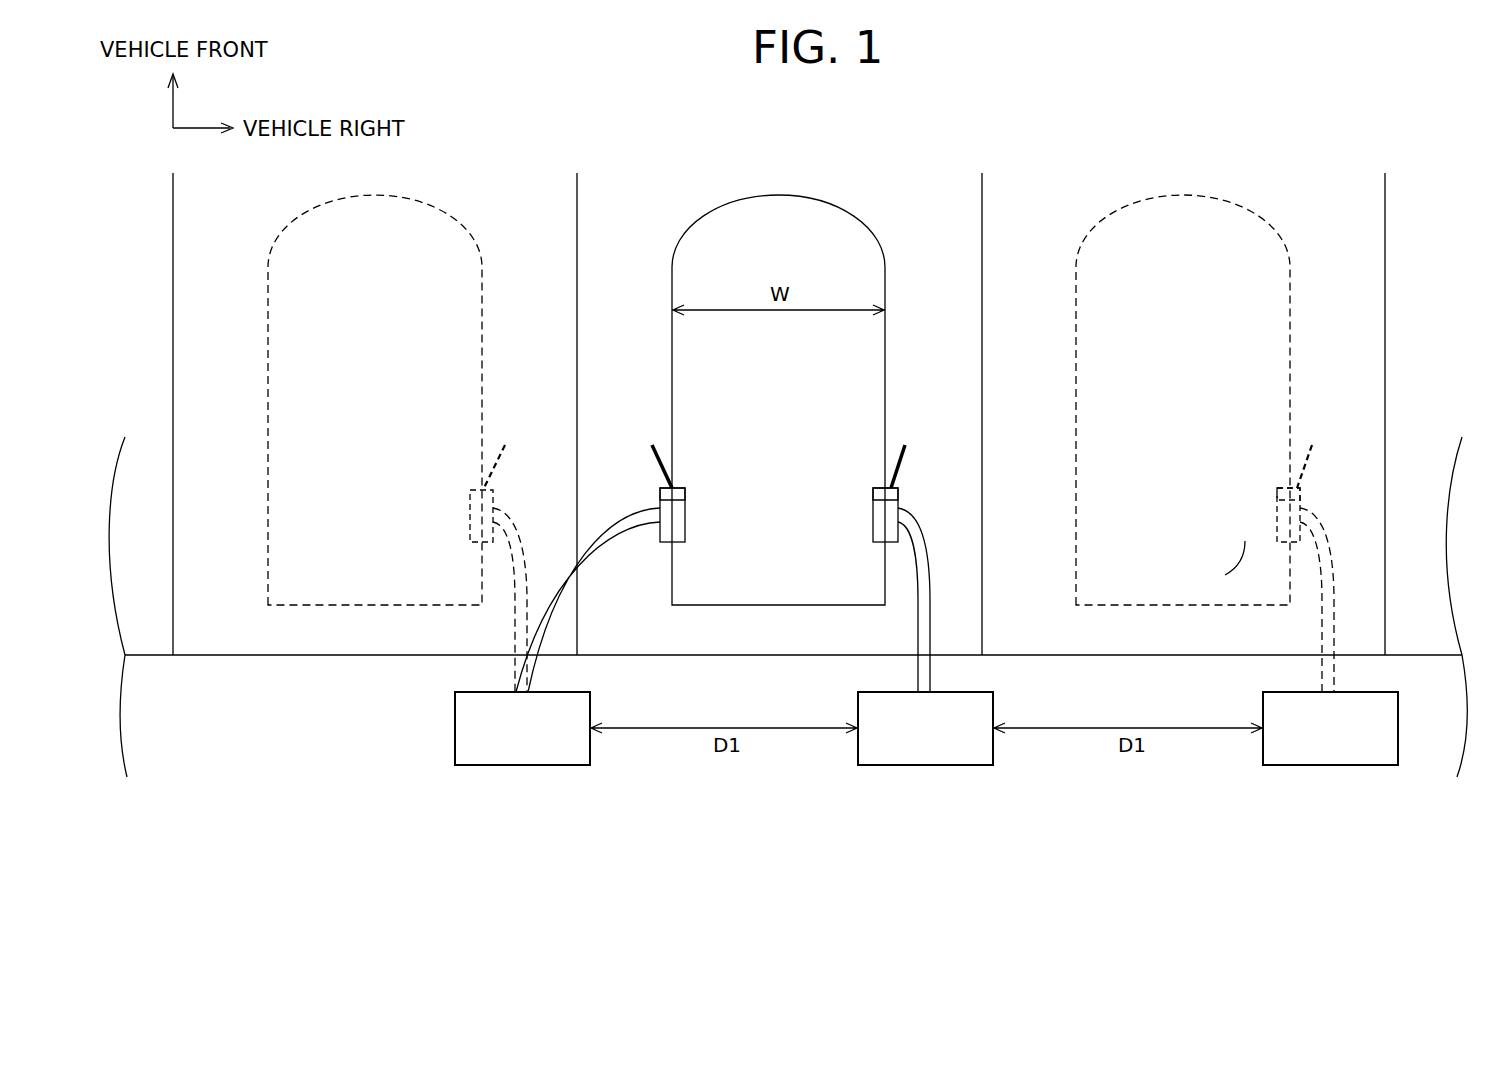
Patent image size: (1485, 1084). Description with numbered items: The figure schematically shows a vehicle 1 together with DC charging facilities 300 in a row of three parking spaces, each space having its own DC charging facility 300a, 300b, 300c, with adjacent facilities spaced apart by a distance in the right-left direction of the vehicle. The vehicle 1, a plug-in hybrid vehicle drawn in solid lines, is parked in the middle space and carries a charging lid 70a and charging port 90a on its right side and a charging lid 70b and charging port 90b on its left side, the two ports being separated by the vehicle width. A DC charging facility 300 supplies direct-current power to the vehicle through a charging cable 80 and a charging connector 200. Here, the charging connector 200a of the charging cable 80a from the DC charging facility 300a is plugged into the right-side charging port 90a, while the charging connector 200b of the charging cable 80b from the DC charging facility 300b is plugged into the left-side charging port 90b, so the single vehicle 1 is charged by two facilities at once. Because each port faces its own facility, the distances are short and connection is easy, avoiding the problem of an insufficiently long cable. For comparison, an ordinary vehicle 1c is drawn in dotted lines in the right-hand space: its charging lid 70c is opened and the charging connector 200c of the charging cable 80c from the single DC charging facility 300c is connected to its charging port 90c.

The vehicle 1 is at (826, 204).
The vehicle 1c is at (1243, 211).
The charging lid 70a is at (906, 452).
The charging lid 70b is at (650, 453).
The charging lid 70c is at (1308, 460).
The charging cable 80 is at (980, 600).
The charging cable 80a is at (933, 603).
The charging cable 80b is at (588, 583).
The charging cable 80c is at (1337, 620).
The charging port 90a is at (874, 488).
The charging port 90b is at (685, 488).
The charging port 90c is at (1278, 488).
The charging connector 200 is at (980, 487).
The charging connector 200a is at (899, 488).
The charging connector 200b is at (660, 488).
The charging connector 200c is at (1301, 488).
The DC charging facility 300 is at (926, 766).
The DC charging facility 300a is at (930, 768).
The DC charging facility 300b is at (527, 768).
The DC charging facility 300c is at (1335, 768).